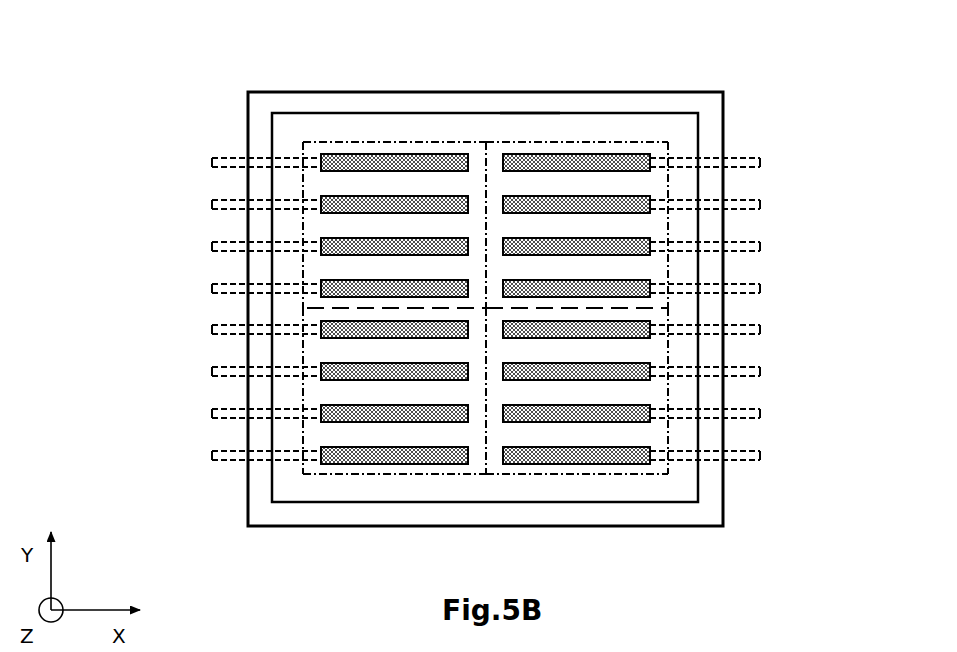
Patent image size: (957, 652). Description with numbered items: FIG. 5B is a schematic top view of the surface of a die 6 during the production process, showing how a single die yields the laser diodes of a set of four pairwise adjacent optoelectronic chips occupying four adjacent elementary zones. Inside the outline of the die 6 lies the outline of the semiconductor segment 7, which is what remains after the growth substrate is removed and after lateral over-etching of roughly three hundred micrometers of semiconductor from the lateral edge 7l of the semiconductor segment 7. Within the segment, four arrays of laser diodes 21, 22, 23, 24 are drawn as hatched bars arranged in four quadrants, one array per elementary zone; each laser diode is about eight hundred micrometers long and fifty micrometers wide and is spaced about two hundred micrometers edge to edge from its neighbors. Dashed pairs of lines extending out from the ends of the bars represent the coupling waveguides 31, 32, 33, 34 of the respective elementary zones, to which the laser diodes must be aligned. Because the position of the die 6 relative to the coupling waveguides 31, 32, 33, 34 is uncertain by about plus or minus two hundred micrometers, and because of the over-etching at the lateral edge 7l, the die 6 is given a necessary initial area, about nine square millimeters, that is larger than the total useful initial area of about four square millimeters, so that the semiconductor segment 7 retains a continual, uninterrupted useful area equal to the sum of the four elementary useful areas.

The die 6 is at (392, 274).
The semiconductor segment 7 is at (380, 262).
The lateral edge of the semiconductor segment 7l is at (523, 113).
The array of laser diodes of elementary zone z1 21 is at (394, 173).
The array of laser diodes of elementary zone z2 22 is at (576, 173).
The array of laser diodes of elementary zone z3 23 is at (576, 447).
The array of laser diodes of elementary zone z4 24 is at (394, 447).
The coupling waveguides of elementary zone z1 31 is at (229, 225).
The coupling waveguides of elementary zone z2 32 is at (747, 225).
The coupling waveguides of elementary zone z3 33 is at (747, 392).
The coupling waveguides of elementary zone z4 34 is at (229, 392).